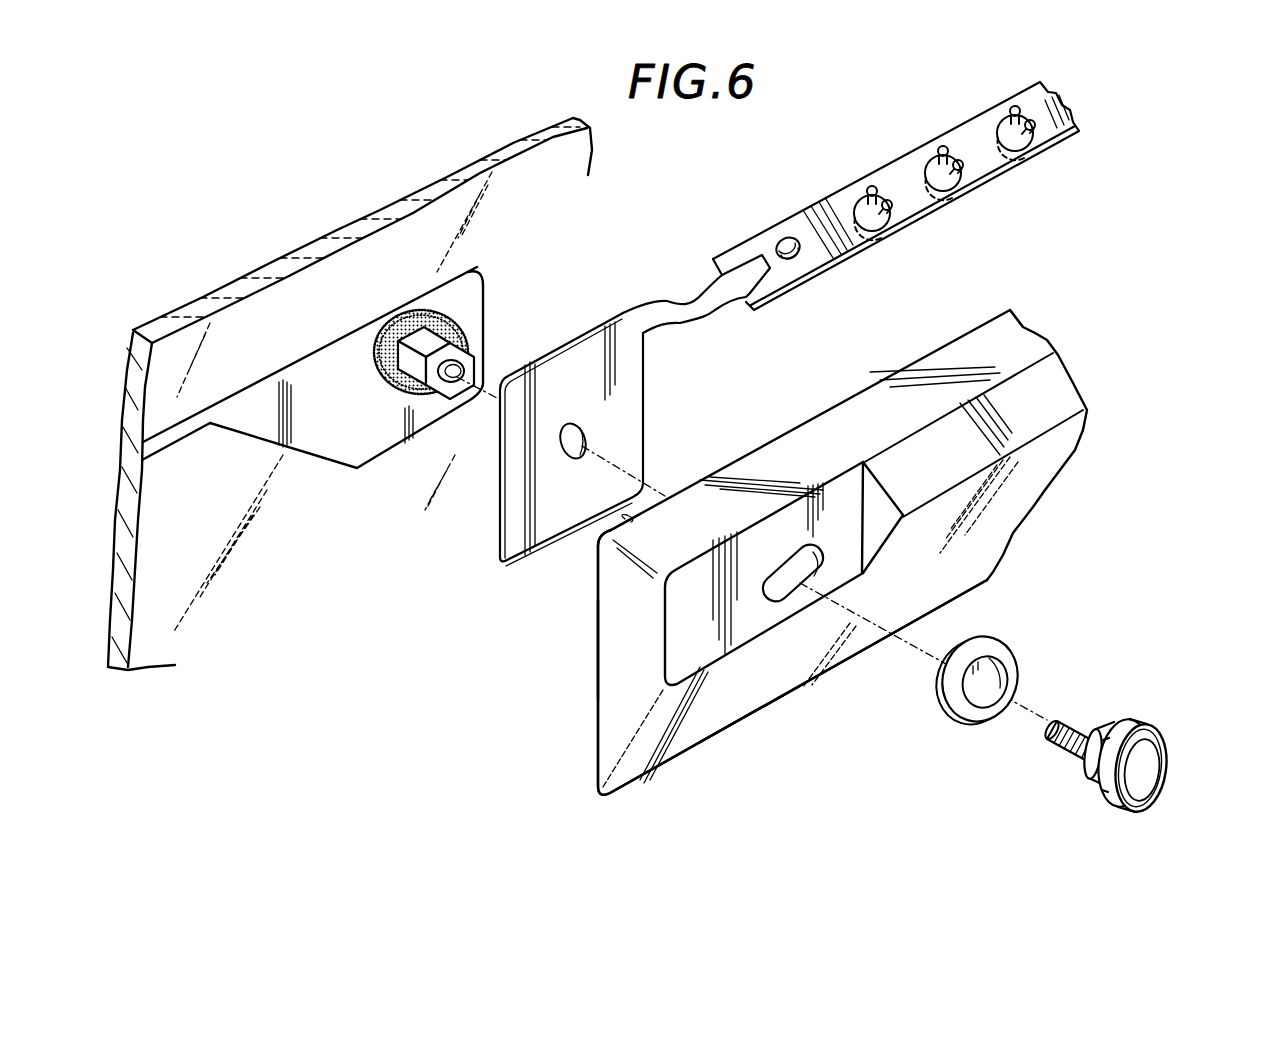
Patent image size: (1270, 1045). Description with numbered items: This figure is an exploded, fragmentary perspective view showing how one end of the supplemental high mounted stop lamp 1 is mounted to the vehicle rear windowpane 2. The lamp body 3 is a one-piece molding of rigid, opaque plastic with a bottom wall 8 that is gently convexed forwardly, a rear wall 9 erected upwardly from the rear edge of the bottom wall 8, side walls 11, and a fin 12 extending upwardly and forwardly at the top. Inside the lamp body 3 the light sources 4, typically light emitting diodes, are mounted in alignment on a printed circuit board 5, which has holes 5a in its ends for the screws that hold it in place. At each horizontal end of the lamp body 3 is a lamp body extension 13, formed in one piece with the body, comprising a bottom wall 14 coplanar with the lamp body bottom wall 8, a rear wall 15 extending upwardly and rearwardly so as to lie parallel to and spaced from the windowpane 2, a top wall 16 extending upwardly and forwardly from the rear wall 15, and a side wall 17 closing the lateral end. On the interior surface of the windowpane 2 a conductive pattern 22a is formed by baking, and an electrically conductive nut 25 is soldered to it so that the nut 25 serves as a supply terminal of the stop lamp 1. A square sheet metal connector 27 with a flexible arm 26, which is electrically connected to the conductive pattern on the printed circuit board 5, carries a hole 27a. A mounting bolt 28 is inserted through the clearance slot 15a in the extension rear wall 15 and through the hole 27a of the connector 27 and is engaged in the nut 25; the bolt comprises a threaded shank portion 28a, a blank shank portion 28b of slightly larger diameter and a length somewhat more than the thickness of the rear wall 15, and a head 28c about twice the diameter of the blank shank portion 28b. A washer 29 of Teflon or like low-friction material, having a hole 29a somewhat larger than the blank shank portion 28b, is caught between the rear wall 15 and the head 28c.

The supplemental high mounted stop lamp 1 is at (1146, 205).
The vehicle rear windowpane 2 is at (357, 258).
The lamp body 3 is at (1053, 457).
The light sources 4 is at (850, 229).
The printed circuit board 5 is at (893, 169).
The holes 5a is at (789, 260).
The bottom wall 8 is at (1013, 530).
The rear wall 9 is at (1060, 387).
The side walls 11 is at (873, 513).
The fin 12 is at (1018, 323).
The lamp body extension 13 is at (686, 740).
The bottom wall 14 is at (733, 718).
The rear wall 15 is at (672, 656).
The clearance hole or slot 15a is at (781, 598).
The top wall 16 is at (608, 529).
The side wall 17 is at (617, 642).
The conductive pattern 22a is at (480, 291).
The nut 25 is at (470, 351).
The flexible arm 26 is at (660, 301).
The sheet metal connector 27 is at (576, 365).
The hole 27a is at (583, 440).
The mounting bolt 28 is at (1134, 738).
The threaded shank portion 28a is at (1071, 718).
The blank shank portion 28b is at (1106, 733).
The head 28c is at (1150, 731).
The washer 29 is at (958, 722).
The hole 29a is at (1008, 663).